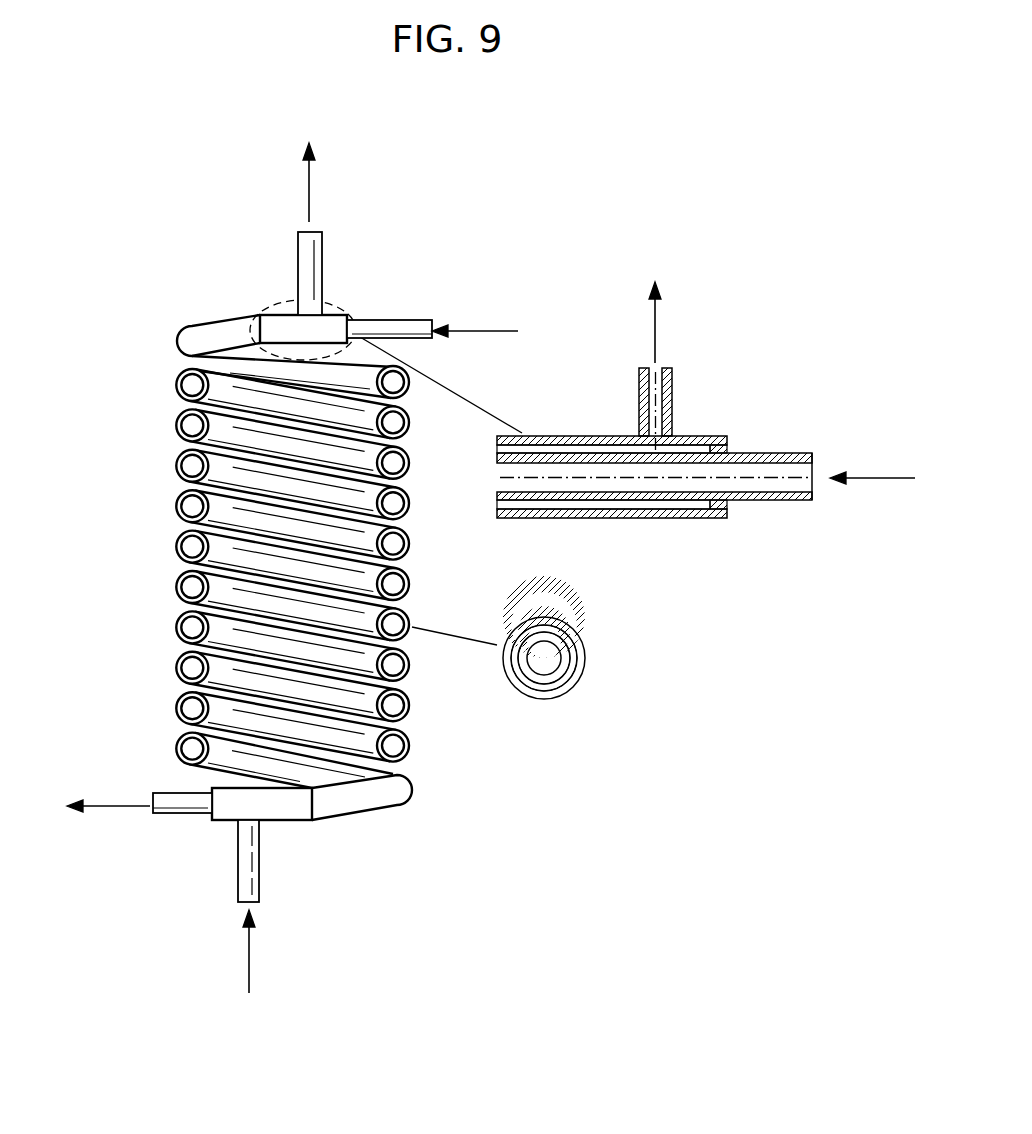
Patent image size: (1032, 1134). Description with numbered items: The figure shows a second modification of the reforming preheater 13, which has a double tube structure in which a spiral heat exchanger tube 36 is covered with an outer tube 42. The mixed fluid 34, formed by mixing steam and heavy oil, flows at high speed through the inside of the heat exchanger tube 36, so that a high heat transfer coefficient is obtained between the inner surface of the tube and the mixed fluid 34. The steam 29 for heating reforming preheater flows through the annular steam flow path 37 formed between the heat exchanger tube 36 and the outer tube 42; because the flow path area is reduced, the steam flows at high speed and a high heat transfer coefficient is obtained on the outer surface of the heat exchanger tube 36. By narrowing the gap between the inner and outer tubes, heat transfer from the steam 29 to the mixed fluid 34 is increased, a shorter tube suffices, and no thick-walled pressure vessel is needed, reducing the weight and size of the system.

The reforming preheater 13 is at (176, 466).
The steam for heating reforming preheater 29 is at (250, 950).
The mixed fluid 34 is at (487, 329).
The heat exchanger tube 36 is at (573, 497).
The steam flow path 37 is at (540, 503).
The outer tube 42 is at (665, 513).